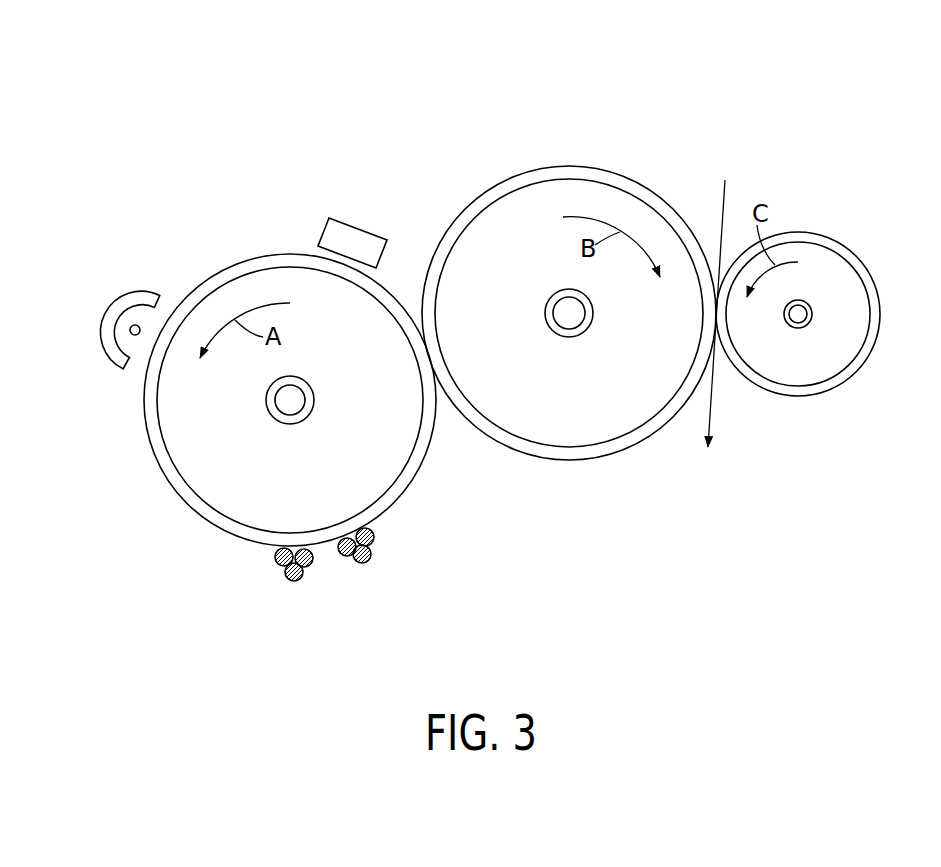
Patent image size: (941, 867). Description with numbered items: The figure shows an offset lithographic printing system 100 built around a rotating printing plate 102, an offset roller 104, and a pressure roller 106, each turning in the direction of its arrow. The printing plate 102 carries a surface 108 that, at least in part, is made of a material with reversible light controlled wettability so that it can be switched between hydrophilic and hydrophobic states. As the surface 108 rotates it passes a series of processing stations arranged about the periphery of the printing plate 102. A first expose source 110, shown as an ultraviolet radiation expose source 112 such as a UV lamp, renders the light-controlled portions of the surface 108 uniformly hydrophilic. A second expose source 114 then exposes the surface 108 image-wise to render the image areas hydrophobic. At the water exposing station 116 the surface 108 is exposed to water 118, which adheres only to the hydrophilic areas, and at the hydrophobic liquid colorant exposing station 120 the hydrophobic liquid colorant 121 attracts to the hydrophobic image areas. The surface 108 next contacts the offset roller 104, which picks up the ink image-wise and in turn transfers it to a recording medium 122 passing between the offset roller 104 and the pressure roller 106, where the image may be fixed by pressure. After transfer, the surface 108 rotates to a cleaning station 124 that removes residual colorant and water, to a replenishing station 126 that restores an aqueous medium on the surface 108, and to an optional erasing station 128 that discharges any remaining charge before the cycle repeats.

The lithographic printing system 100 is at (670, 107).
The printing plate 102 is at (395, 458).
The offset roller 104 is at (543, 193).
The pressure roller 106 is at (810, 255).
The surface 108 is at (397, 270).
The first expose source 110 is at (102, 359).
The ultraviolet radiation expose source 112 is at (112, 310).
The second expose source 114 is at (160, 503).
The water exposing station 116 is at (261, 603).
The water 118 is at (275, 553).
The hydrophobic liquid colorant exposing station 120 is at (371, 578).
The hydrophobic liquid colorant 121 is at (340, 562).
The recording medium 122 is at (722, 192).
The cleaning station 124 is at (357, 222).
The replenishing station 126 is at (230, 262).
The erasing station 128 is at (186, 250).